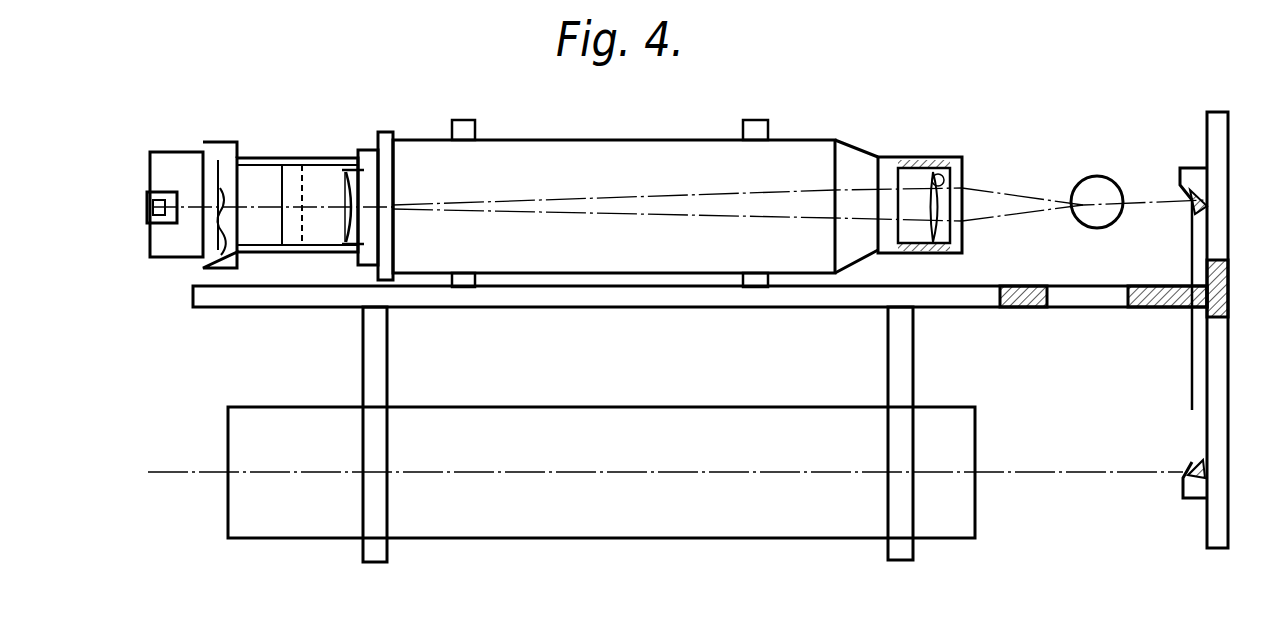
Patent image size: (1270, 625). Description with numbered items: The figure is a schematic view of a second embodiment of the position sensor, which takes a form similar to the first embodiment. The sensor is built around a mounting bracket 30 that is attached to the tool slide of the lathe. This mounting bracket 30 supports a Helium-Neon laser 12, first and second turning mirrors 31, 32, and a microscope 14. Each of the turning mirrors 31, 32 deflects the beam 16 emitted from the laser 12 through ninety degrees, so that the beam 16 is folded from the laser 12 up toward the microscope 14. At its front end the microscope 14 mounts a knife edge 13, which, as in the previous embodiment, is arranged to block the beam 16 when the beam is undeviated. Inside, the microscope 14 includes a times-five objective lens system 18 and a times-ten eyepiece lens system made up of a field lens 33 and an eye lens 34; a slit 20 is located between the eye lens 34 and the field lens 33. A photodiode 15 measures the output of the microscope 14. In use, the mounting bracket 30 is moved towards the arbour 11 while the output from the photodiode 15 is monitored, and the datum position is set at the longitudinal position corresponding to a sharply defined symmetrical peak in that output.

The arbour 11 is at (1098, 176).
The Helium-Neon laser 12 is at (585, 540).
The knife edge 13 is at (963, 160).
The microscope 14 is at (683, 118).
The photodiode 15 is at (148, 228).
The beam 16 is at (1148, 200).
The objective lens system 18 is at (936, 170).
The slit 20 is at (304, 180).
The mounting bracket 30 is at (678, 300).
The first turning mirror 31 is at (1183, 475).
The second turning mirror 32 is at (1195, 215).
The field lens 33 is at (344, 212).
The eye lens 34 is at (220, 253).